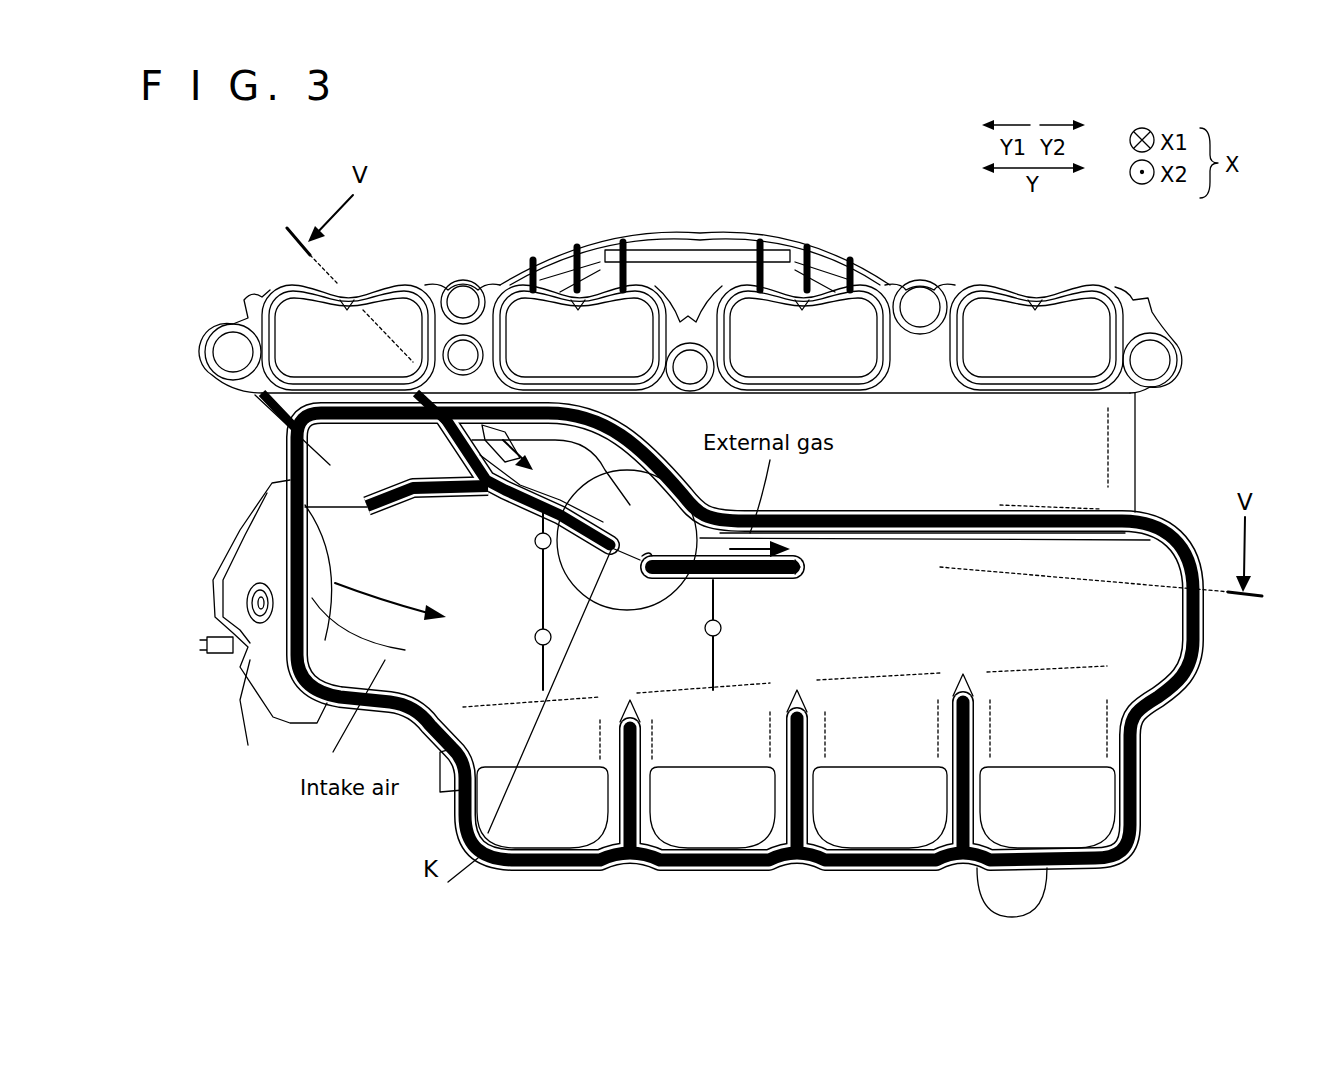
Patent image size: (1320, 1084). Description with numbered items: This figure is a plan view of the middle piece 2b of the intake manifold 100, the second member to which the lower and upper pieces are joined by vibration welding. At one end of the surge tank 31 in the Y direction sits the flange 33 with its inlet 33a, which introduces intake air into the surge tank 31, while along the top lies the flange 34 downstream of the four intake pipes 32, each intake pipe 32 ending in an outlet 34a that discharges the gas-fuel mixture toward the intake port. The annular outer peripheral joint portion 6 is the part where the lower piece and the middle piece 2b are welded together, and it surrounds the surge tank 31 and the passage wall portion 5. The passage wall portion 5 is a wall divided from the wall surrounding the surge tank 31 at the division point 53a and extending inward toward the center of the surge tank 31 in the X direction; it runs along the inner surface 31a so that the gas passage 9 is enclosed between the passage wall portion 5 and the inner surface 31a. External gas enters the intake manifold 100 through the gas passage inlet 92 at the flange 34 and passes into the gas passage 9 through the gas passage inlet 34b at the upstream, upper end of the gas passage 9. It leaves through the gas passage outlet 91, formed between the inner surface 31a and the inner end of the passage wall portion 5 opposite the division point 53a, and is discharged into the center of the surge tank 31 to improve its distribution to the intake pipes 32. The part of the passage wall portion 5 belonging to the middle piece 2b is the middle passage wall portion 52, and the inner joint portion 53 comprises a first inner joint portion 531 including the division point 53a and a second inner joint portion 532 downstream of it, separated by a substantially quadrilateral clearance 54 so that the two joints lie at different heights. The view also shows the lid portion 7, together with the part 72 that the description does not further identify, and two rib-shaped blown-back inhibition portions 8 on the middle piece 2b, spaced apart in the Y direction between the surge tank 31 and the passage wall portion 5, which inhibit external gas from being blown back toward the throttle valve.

The intake manifold 100 is at (238, 200).
The middle piece 2b is at (555, 215).
The flange 34 is at (247, 293).
The outlet 34a is at (400, 303).
The gas passage inlet 34b is at (467, 360).
The gas passage inlet 92 is at (497, 410).
The division point 53a is at (270, 403).
The gas passage 9 is at (563, 477).
The inner joint portion 53 is at (520, 541).
The first inner joint portion 531 is at (507, 507).
The second inner joint portion 532 is at (750, 580).
The clearance 54 is at (640, 577).
The middle passage wall portion 52 is at (700, 580).
The lid portion 7 is at (565, 690).
The boss portion 72 is at (605, 612).
The blown-back inhibition portion 8 is at (537, 667).
The intake pipe 32 is at (537, 837).
The flange 33 is at (696, 665).
The inlet 33a is at (288, 617).
The outer peripheral joint portion 6 is at (960, 513).
The surge tank 31 is at (922, 511).
The inner surface 31a is at (810, 533).
The gas passage outlet 91 is at (803, 560).
The passage wall portion 5 is at (767, 590).